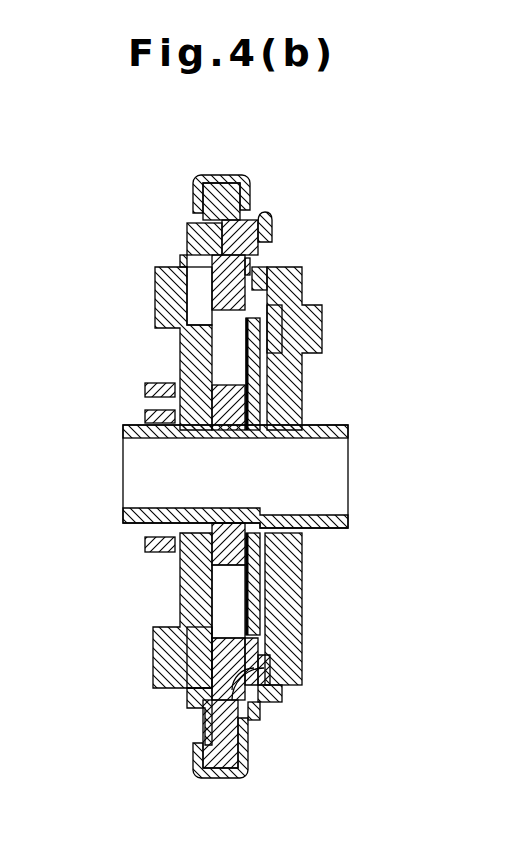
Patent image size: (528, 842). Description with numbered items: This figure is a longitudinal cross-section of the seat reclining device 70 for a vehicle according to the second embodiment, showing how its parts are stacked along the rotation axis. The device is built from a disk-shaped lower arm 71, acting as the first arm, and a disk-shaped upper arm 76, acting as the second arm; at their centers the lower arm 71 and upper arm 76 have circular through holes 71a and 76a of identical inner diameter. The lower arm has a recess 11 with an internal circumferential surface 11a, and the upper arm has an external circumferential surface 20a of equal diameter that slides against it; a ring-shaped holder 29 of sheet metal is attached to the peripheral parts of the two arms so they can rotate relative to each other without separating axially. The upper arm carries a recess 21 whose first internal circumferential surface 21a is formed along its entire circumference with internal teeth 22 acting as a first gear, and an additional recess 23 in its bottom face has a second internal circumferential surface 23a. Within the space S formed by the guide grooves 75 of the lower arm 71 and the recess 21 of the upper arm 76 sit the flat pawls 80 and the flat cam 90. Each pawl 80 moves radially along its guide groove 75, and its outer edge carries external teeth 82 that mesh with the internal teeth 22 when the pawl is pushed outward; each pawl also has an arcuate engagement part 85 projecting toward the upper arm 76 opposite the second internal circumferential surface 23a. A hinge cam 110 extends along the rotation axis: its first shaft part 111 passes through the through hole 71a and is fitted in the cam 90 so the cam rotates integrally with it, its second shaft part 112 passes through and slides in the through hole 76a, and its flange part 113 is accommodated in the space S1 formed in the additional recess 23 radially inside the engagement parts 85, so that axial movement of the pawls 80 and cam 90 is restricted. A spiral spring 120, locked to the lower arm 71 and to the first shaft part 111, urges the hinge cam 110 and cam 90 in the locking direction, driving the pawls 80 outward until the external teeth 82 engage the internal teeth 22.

The seat reclining device 70 is at (421, 262).
The holder 29 is at (215, 175).
The external circumferential surface 20a is at (256, 213).
The recess 11 is at (273, 230).
The internal circumferential surface 11a is at (187, 227).
The recess 21 is at (212, 258).
The external teeth 82 is at (235, 235).
The lower arm 71 is at (160, 292).
The pawl 80 is at (220, 302).
The guide groove 75 is at (215, 358).
The engagement part 85 is at (253, 279).
The upper arm 76 is at (318, 326).
The cam 90 is at (300, 388).
The through hole 71a is at (200, 438).
The through hole 76a is at (294, 438).
The hinge cam 110 is at (150, 415).
The first shaft part 111 is at (135, 528).
The second shaft part 112 is at (345, 530).
The spiral spring 120 is at (145, 548).
The additional recess 23 is at (265, 594).
The space S is at (200, 615).
The space S1 is at (233, 651).
The flange part 113 is at (255, 548).
The internal teeth 22 is at (260, 662).
The first internal circumferential surface 21a is at (272, 680).
The second internal circumferential surface 23a is at (268, 688).